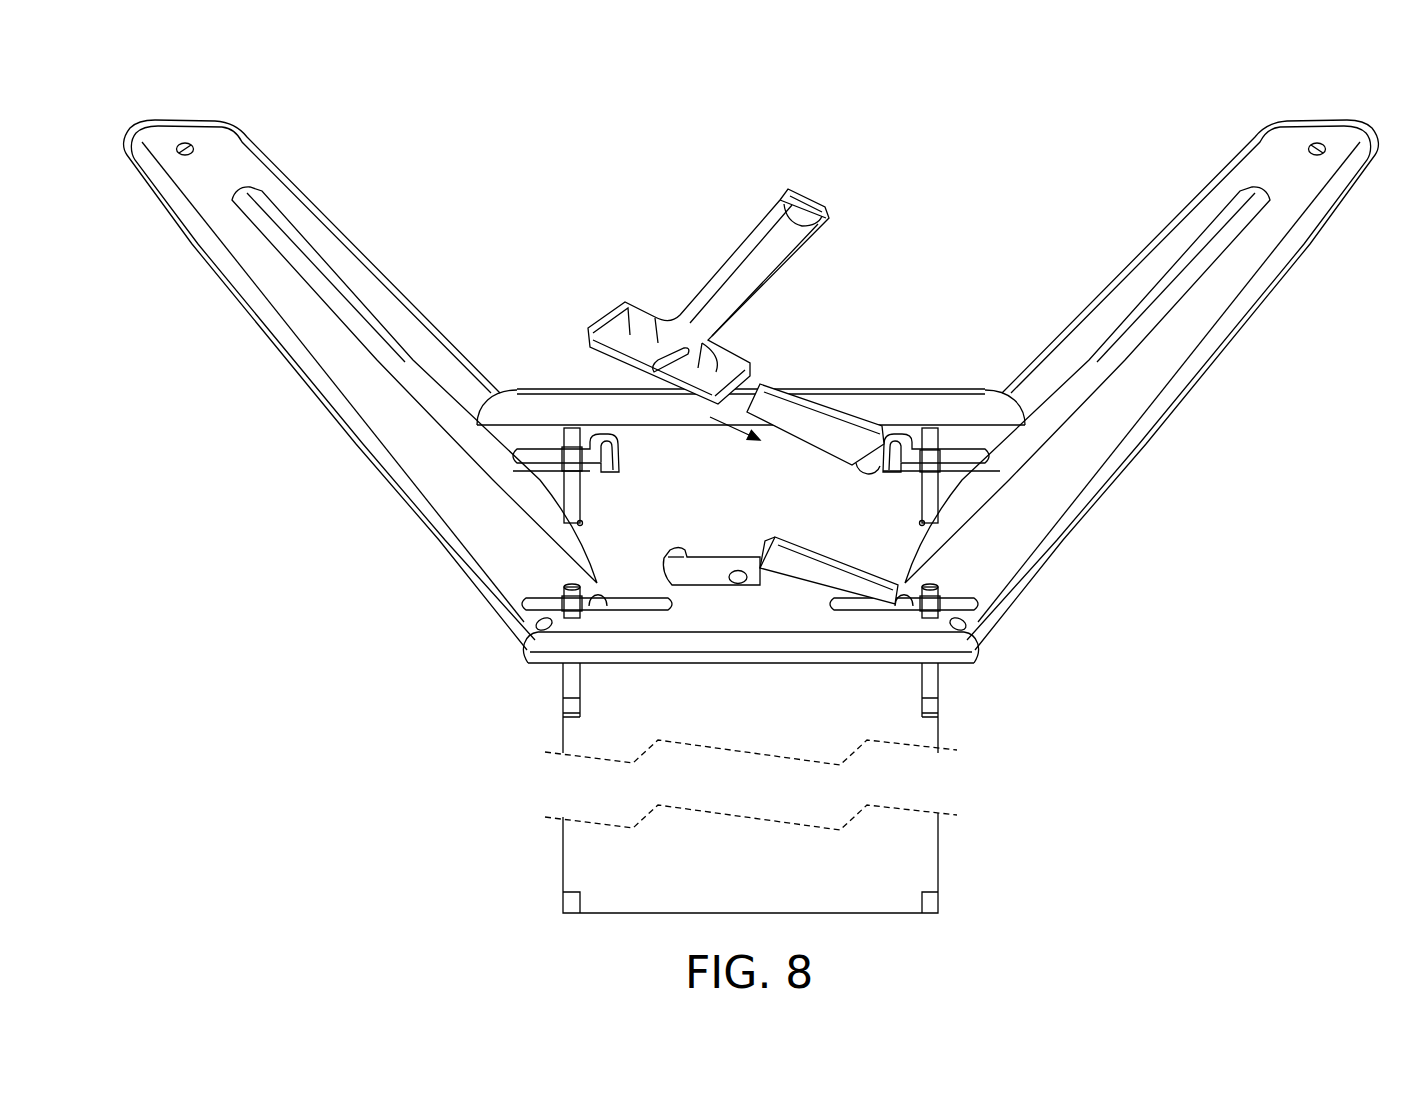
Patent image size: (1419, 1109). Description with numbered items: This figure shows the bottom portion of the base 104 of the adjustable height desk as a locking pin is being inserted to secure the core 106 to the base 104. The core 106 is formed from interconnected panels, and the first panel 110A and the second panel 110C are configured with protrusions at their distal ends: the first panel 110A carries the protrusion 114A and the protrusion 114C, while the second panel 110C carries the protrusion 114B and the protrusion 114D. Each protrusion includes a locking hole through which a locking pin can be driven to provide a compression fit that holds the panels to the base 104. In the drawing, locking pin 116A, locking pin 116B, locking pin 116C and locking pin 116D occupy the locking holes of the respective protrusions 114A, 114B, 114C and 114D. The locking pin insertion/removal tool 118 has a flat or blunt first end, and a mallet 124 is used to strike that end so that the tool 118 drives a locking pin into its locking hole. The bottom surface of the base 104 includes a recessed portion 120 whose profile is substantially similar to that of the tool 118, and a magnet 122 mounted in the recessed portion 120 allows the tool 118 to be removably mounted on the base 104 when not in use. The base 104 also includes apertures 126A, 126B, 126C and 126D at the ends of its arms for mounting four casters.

The base 104 is at (1160, 452).
The core 106 is at (977, 862).
The first panel 110A is at (570, 692).
The second panel 110C is at (933, 692).
The protrusion 114A is at (563, 580).
The protrusion 114B is at (933, 437).
The protrusion 114C is at (572, 437).
The protrusion 114D is at (947, 587).
The locking pin 116A is at (610, 603).
The locking pin 116B is at (893, 470).
The locking pin 116C is at (621, 468).
The locking pin 116D is at (900, 610).
The locking pin insertion/removal tool 118 is at (803, 397).
The recessed portion 120 is at (720, 580).
The magnet 122 is at (740, 568).
The mallet 124 is at (830, 220).
The aperture 126A is at (541, 624).
The aperture 126B is at (1322, 145).
The aperture 126C is at (187, 143).
The aperture 126D is at (962, 627).